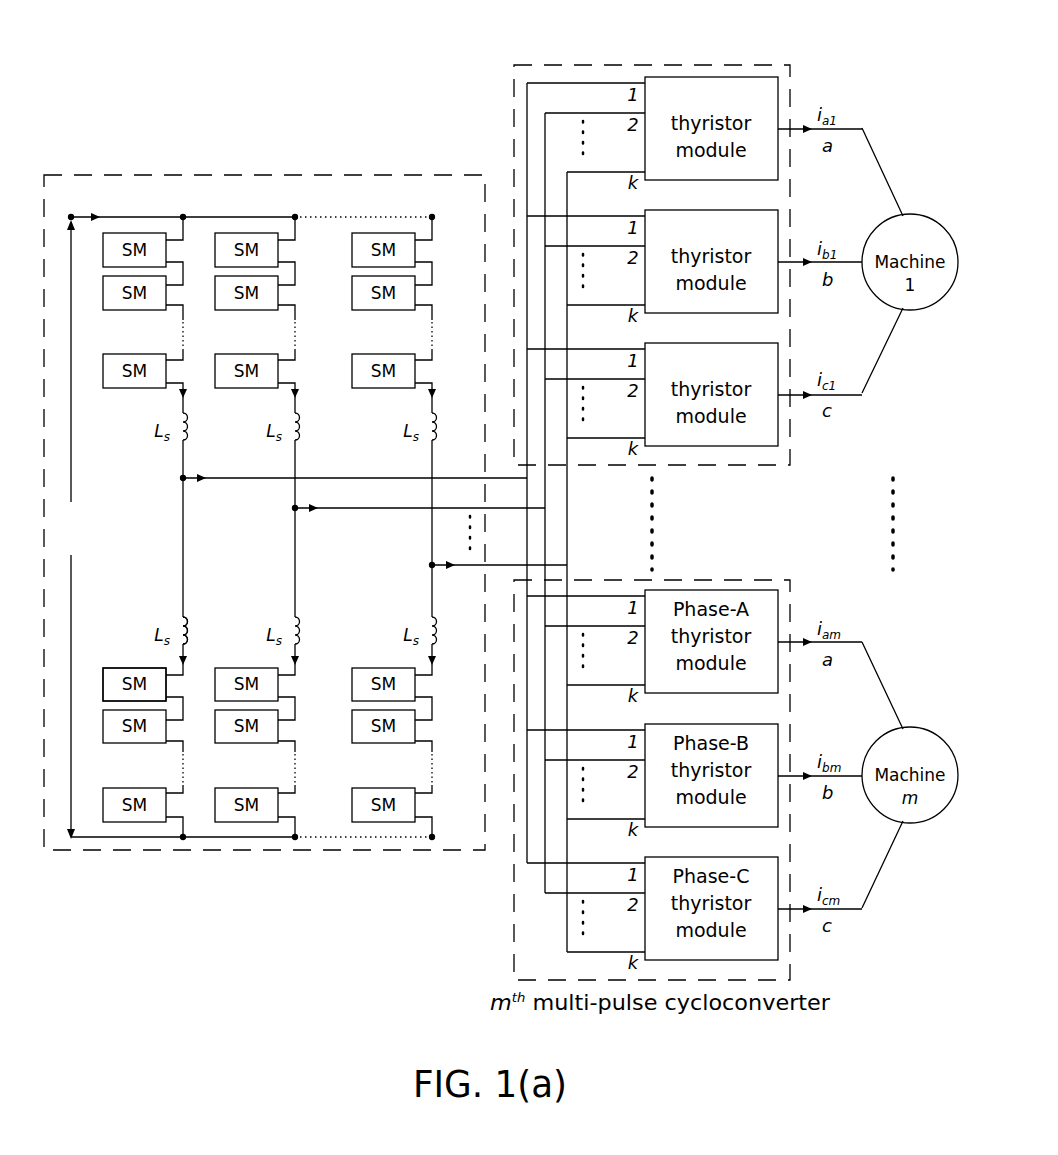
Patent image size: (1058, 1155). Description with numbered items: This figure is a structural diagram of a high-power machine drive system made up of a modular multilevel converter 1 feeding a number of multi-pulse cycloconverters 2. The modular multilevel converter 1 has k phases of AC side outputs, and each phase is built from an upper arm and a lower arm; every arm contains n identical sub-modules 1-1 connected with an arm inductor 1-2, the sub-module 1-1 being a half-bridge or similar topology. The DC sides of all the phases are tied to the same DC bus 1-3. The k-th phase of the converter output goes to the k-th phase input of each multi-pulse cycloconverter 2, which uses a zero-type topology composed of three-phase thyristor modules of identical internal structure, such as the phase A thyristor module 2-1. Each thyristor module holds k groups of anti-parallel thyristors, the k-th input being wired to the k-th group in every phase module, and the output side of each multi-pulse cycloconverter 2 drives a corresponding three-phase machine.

The modular multilevel converter 1 is at (131, 175).
The sub-module 1-1 is at (132, 668).
The arm inductor 1-2 is at (180, 612).
The DC bus 1-3 is at (75, 510).
The multi-pulse cycloconverter 2 is at (742, 465).
The phase A thyristor module 2-1 is at (778, 93).